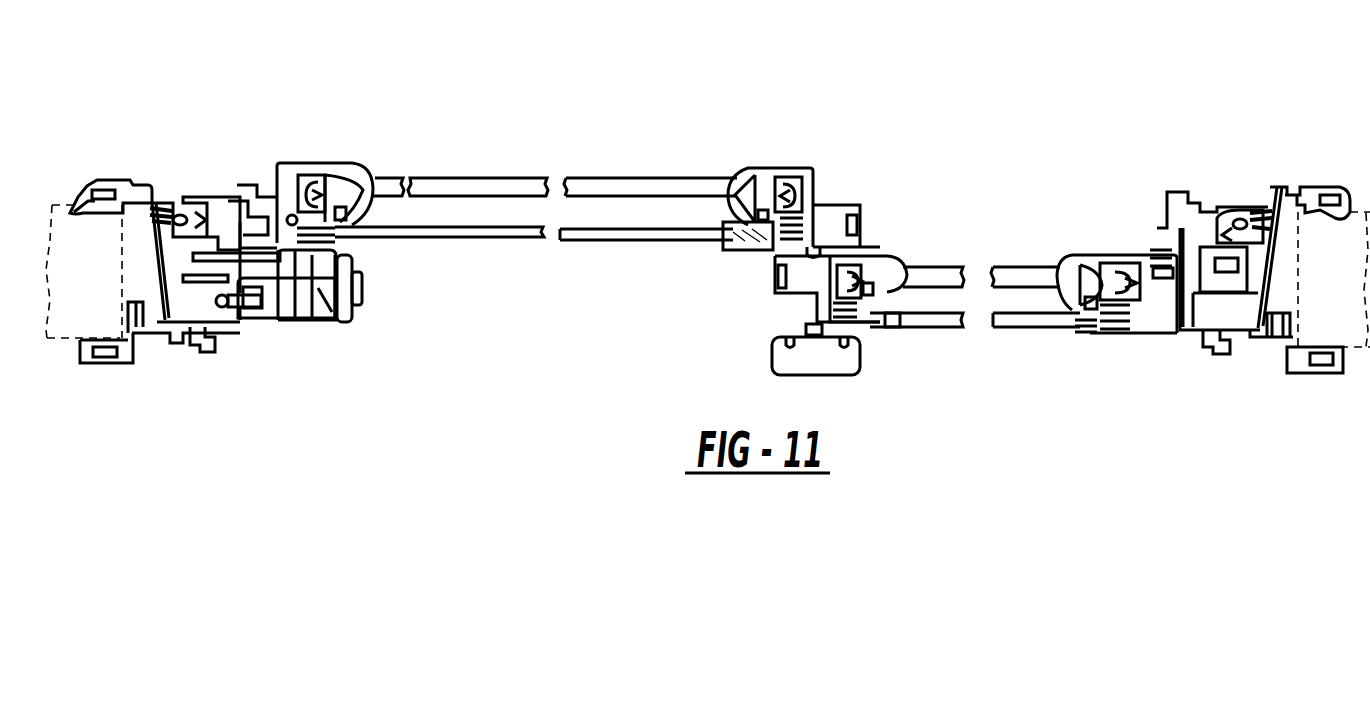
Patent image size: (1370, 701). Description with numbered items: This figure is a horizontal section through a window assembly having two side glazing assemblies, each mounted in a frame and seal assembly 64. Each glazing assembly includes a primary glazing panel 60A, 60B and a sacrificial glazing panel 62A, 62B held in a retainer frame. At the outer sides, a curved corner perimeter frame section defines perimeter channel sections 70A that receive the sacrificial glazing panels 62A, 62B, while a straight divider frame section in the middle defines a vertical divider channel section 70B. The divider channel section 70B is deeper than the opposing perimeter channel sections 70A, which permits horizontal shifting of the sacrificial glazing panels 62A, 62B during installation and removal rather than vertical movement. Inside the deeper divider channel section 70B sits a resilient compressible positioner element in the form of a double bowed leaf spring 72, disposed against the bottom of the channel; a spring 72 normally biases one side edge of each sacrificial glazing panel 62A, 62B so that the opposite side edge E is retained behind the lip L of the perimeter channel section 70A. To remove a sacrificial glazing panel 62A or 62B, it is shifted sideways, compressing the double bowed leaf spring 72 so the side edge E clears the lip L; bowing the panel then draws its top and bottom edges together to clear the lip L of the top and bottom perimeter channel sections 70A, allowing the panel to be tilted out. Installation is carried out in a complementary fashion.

The frame and seal assembly 64 is at (312, 158).
The primary glazing panel 60A is at (460, 177).
The sacrificial glazing panel 62A is at (476, 238).
The double bowed leaf spring 72 is at (747, 172).
The primary glazing panel 60B is at (934, 267).
The sacrificial glazing panel 62B is at (941, 323).
The perimeter channel section 70A is at (376, 248).
The divider channel section 70B is at (737, 240).
The side edge E is at (277, 330).
The lip L is at (323, 263).